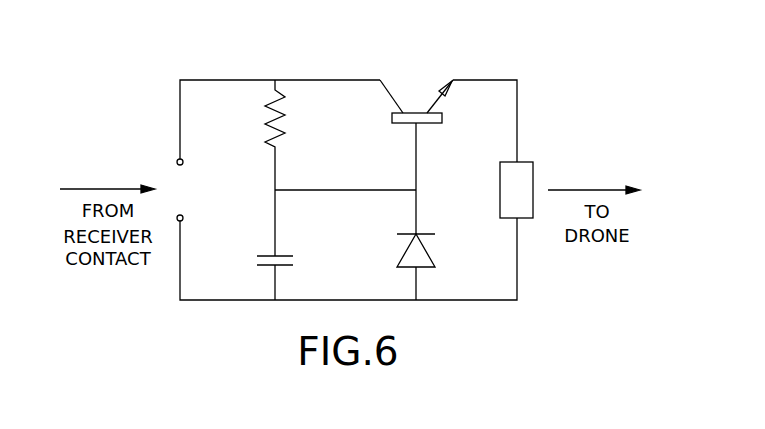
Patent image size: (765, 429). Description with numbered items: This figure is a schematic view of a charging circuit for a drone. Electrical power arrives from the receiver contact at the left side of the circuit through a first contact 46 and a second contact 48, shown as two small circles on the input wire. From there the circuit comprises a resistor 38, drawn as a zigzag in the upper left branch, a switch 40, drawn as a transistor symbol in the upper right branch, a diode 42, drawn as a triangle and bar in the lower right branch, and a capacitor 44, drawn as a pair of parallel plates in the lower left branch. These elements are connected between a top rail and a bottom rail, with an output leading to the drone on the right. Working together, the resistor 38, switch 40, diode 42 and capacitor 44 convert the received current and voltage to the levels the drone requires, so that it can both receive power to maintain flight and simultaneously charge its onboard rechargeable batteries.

The resistor 38 is at (272, 120).
The switch 40 is at (417, 113).
The diode 42 is at (428, 253).
The capacitor 44 is at (267, 266).
The first contact 46 is at (176, 162).
The second contact 48 is at (183, 215).